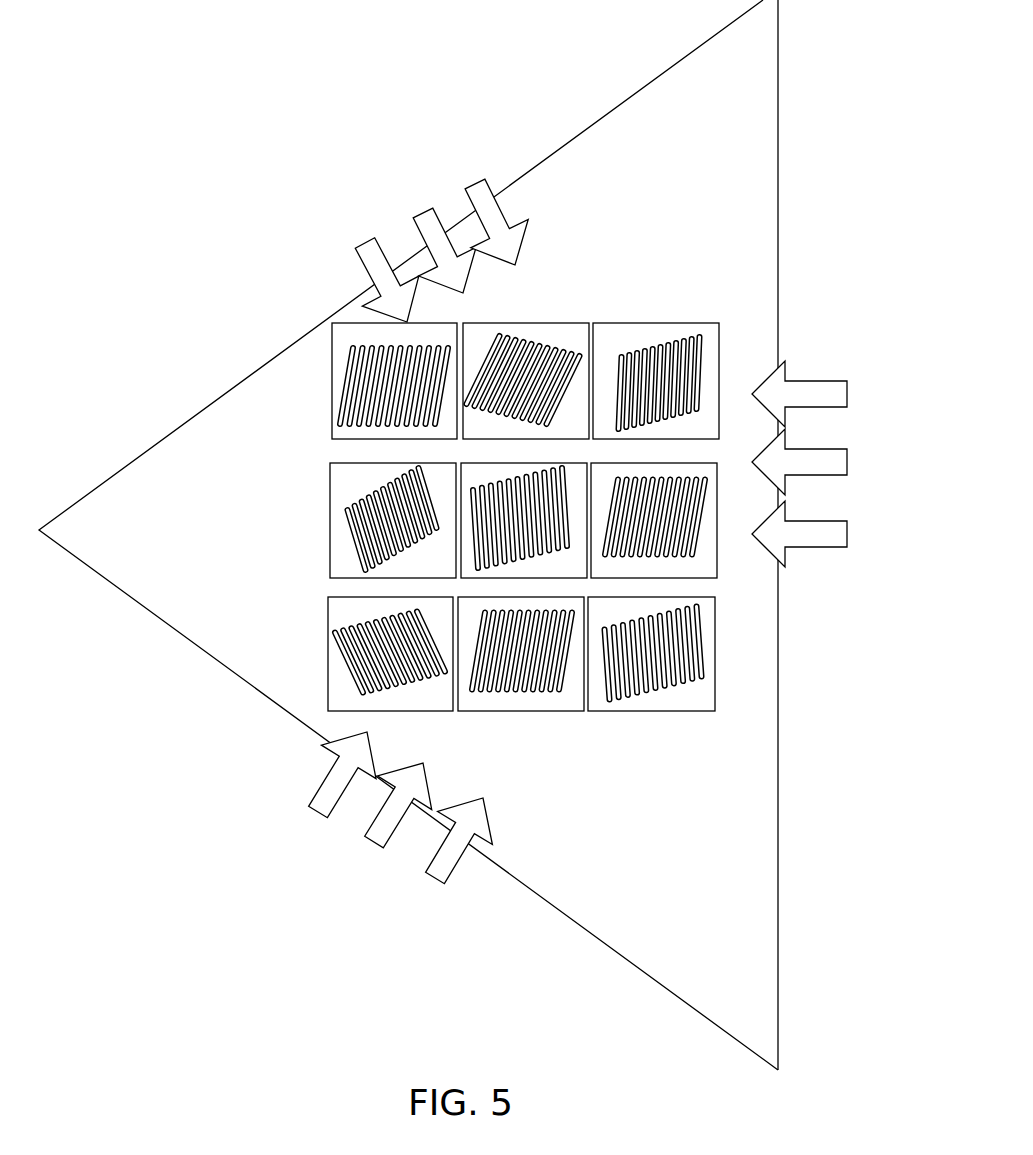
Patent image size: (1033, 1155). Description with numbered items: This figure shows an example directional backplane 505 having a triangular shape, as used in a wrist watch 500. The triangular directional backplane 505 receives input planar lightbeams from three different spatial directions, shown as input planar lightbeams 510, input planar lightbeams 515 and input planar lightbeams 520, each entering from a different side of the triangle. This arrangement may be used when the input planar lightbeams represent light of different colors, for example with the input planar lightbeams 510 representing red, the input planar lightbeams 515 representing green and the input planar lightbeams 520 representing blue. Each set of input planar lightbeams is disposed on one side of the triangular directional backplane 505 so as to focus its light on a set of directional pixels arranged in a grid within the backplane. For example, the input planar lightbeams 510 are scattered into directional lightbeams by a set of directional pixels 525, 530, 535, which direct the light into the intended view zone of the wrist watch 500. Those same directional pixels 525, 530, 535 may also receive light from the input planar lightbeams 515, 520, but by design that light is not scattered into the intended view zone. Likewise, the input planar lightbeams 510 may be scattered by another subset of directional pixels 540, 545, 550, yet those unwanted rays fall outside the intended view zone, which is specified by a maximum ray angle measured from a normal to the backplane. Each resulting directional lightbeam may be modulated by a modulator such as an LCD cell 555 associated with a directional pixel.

The wrist watch 500 is at (473, 82).
The directional backplane 505 is at (173, 462).
The input planar lightbeams 510 is at (477, 192).
The input planar lightbeams 515 is at (822, 378).
The input planar lightbeams 520 is at (325, 797).
The directional pixel 525 is at (350, 362).
The directional pixel 530 is at (515, 345).
The directional pixel 535 is at (643, 360).
The directional pixel 540 is at (360, 640).
The directional pixel 545 is at (530, 675).
The directional pixel 550 is at (655, 673).
The LCD cell 555 is at (348, 434).